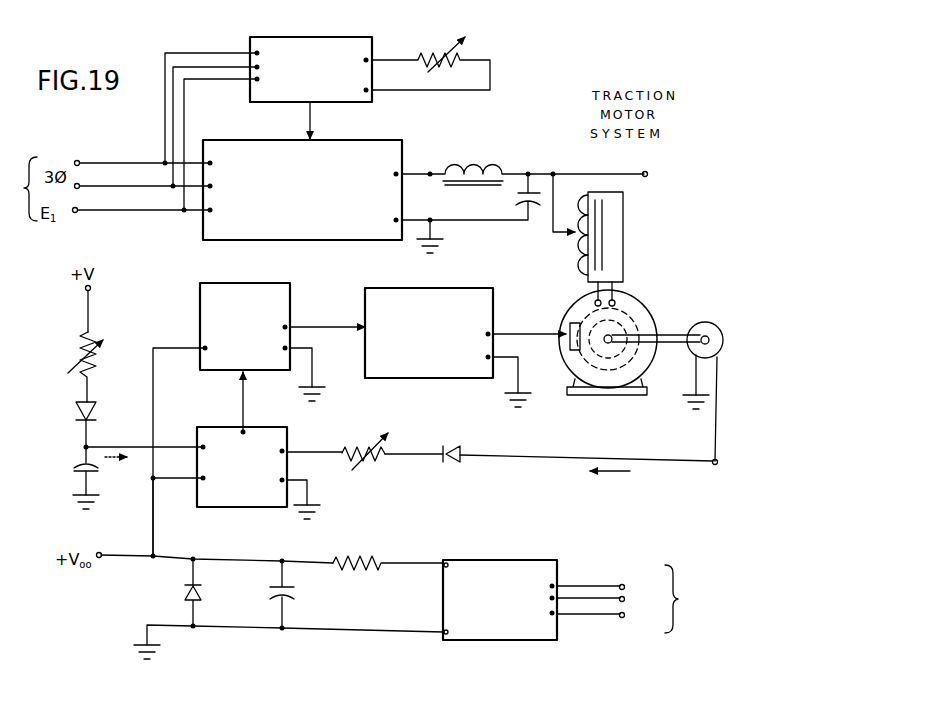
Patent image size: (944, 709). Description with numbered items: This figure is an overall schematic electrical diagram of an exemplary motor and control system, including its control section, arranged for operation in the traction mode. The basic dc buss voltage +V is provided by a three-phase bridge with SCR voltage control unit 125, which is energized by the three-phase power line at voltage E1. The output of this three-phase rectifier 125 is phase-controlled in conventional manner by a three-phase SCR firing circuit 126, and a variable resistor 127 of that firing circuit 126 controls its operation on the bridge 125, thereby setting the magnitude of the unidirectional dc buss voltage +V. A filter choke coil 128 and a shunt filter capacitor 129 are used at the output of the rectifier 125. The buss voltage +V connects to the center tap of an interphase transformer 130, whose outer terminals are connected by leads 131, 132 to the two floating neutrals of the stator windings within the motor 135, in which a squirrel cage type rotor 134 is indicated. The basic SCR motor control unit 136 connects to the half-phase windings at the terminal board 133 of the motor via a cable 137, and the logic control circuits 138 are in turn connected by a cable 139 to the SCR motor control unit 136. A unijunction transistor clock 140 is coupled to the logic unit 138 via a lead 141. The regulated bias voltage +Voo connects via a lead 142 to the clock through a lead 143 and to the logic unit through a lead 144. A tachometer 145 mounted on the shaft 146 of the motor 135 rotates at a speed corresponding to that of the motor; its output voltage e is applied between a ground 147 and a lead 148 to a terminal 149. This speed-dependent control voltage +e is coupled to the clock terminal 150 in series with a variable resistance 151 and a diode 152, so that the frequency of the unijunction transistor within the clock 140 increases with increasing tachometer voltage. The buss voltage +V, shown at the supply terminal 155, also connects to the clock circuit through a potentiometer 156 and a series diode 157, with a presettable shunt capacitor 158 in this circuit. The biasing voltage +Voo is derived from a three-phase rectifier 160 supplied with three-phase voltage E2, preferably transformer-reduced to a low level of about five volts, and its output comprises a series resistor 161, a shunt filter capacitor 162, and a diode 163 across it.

The three-phase bridge with SCR voltage control unit 125 is at (352, 240).
The three-phase SCR firing circuit 126 is at (350, 102).
The variable resistor 127 is at (431, 58).
The filter choke coil 128 is at (481, 162).
The shunt filter capacitor 129 is at (521, 195).
The interphase transformer 130 is at (578, 248).
The lead 131 is at (590, 293).
The lead 132 is at (615, 296).
The terminal board 133 is at (573, 350).
The squirrel cage type rotor 134 is at (600, 366).
The motor 135 is at (648, 318).
The SCR motor control unit 136 is at (459, 287).
The cable 137 is at (538, 337).
The logic control circuits 138 is at (245, 284).
The cable 139 is at (322, 326).
The unijunction transistor clock 140 is at (252, 509).
The lead 141 is at (240, 394).
The lead 142 is at (152, 505).
The lead 143 is at (177, 480).
The lead 144 is at (176, 346).
The tachometer 145 is at (717, 324).
The shaft 146 is at (671, 346).
The ground 147 is at (688, 388).
The lead 148 is at (720, 389).
The terminal 149 is at (715, 466).
The terminal 150 is at (290, 449).
The variable resistance 151 is at (373, 461).
The diode 152 is at (445, 463).
The supply terminal +V 155 is at (86, 291).
The potentiometer 156 is at (76, 352).
The series diode 157 is at (73, 413).
The presettable shunt capacitor 158 is at (73, 469).
The three-phase rectifier 160 is at (522, 558).
The series resistor 161 is at (358, 560).
The shunt filter capacitor 162 is at (289, 600).
The diode 163 is at (198, 600).